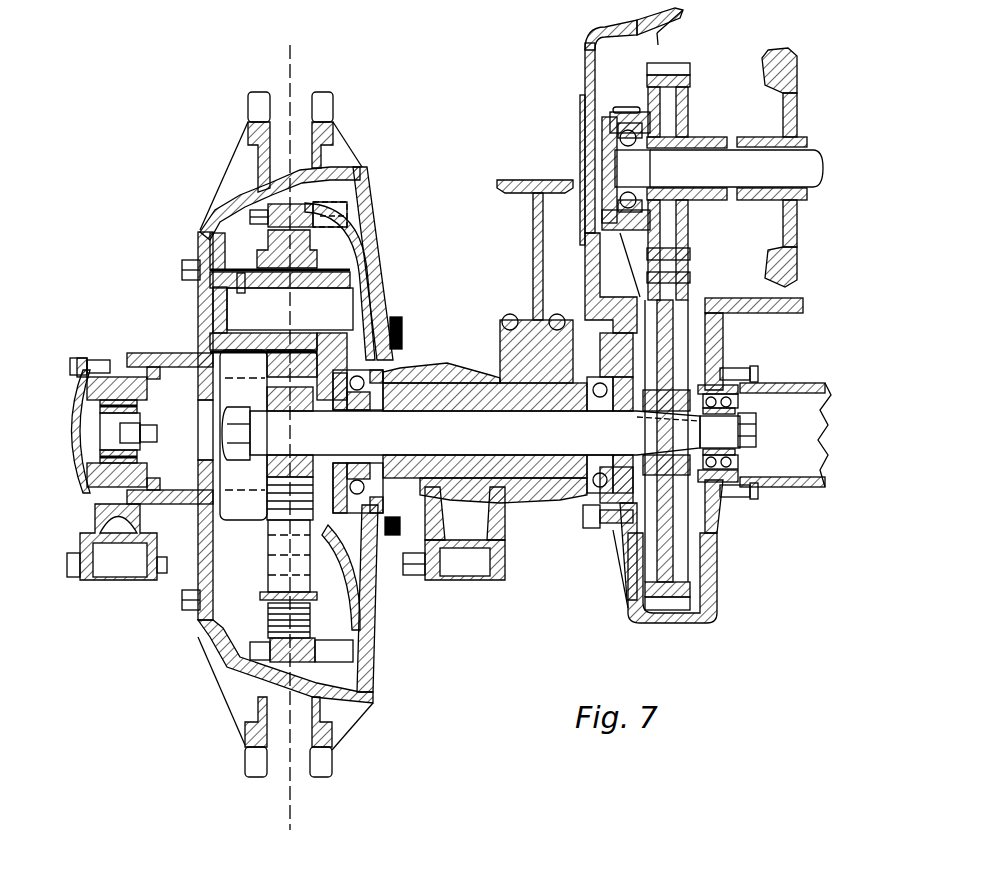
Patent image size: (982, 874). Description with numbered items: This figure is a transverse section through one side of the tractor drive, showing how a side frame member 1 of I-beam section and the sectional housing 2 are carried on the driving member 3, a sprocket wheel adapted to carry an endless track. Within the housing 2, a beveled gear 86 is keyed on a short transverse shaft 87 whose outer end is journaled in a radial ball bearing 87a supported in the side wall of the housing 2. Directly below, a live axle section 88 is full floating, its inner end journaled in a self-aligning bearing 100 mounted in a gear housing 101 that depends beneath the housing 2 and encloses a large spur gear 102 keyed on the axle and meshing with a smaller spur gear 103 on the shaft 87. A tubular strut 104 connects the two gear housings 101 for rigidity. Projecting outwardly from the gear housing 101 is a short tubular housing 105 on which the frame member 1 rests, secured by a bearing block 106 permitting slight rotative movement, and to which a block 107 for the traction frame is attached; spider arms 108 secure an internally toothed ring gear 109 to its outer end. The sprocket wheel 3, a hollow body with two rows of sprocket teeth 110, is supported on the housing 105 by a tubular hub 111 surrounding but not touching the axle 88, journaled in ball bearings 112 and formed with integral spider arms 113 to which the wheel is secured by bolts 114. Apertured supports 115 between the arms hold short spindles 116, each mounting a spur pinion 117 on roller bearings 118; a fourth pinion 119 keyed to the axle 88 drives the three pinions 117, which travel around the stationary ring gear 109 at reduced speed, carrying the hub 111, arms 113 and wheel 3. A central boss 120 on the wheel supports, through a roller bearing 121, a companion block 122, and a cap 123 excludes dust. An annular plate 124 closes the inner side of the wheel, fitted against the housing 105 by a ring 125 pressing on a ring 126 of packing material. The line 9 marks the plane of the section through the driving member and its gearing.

The side members of the frame 1 is at (533, 262).
The sectional housing 2 is at (585, 62).
The driving member 3 is at (208, 215).
The section line 9— 9 is at (290, 55).
The beveled gear 86 is at (797, 75).
The short transverse shaft 87 is at (818, 155).
The radial ball bearing 87a is at (620, 133).
The live axle section 88 is at (460, 418).
The self-aligning bearing 100 is at (740, 395).
The gear housing 101 is at (715, 565).
The large spur gear 102 is at (688, 590).
The smaller spur gear 103 is at (688, 82).
The tubular strut 104 is at (800, 487).
The short tubular housing 105 is at (535, 495).
The bearing block 106 is at (500, 345).
The block 107 is at (438, 375).
The spider arms 108 is at (320, 275).
The ring gear 109 is at (275, 620).
The sprocket teeth 110 is at (248, 107).
The tubular hub 111 is at (500, 495).
The ball bearings 112 is at (366, 383).
The spider arms 113 is at (330, 560).
The bolts 114 is at (182, 262).
The apertured supports 115 is at (222, 360).
The short spindles 116 is at (345, 300).
The spur pinion 117 is at (300, 225).
The roller bearings 118 is at (300, 258).
The fourth pinion 119 is at (262, 470).
The boss 120 is at (180, 353).
The roller bearing 121 is at (75, 495).
The companion block 122 is at (118, 362).
The cap 123 is at (72, 400).
The annular plate 124 is at (366, 240).
The ring 125 is at (402, 330).
The ring of packing material 126 is at (400, 524).